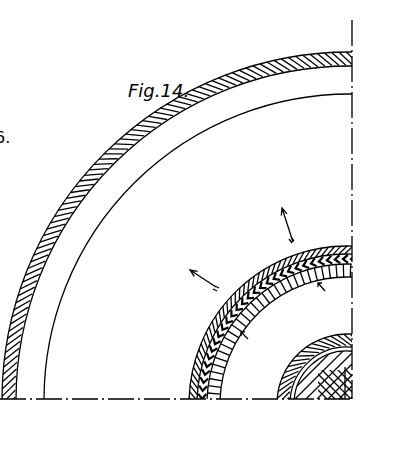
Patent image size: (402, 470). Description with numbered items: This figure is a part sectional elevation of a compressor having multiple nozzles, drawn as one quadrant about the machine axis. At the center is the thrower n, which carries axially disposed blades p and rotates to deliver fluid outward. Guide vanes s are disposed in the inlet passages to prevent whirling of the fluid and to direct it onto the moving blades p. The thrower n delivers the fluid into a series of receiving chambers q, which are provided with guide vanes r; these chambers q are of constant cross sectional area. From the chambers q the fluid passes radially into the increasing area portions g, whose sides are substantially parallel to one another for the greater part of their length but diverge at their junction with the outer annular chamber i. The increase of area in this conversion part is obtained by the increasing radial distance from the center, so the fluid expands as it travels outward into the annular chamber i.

The annular chamber i is at (184, 238).
The increasing area portions g is at (198, 247).
The receiving chambers q is at (336, 248).
The guide vanes r is at (262, 272).
The guide vanes s is at (317, 280).
The thrower n is at (322, 358).
The blades p is at (224, 352).